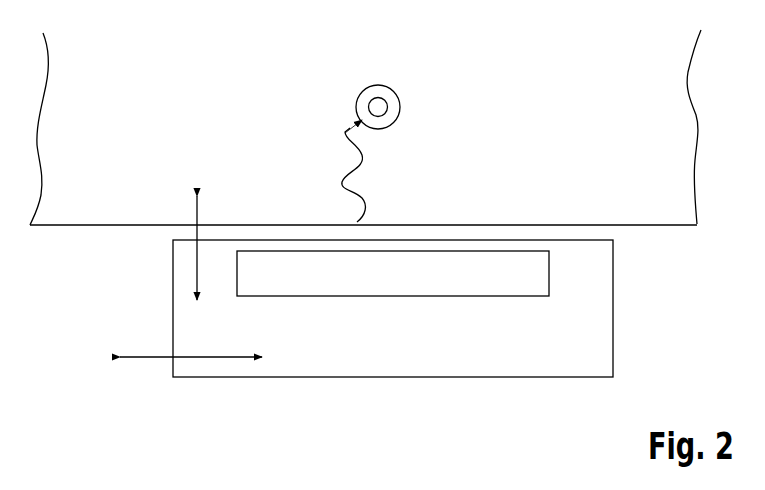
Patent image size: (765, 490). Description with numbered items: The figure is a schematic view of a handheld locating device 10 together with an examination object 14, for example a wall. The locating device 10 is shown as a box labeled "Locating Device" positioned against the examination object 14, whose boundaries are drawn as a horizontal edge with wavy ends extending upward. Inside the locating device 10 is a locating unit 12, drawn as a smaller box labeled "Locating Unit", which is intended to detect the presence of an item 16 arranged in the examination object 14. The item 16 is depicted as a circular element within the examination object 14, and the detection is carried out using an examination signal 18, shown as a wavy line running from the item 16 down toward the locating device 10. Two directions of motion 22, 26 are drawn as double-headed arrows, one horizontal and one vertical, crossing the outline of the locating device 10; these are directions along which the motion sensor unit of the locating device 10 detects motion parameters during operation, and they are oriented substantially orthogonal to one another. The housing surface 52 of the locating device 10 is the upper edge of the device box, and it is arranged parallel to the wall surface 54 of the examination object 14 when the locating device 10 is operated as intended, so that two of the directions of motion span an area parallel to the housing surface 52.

The locating device 10 is at (173, 317).
The locating unit 12 is at (326, 301).
The examination object 14 is at (679, 121).
The item 16 is at (394, 92).
The examination signal 18 is at (343, 192).
The direction of motion 22 is at (158, 357).
The direction of motion 26 is at (197, 262).
The housing surface 52 is at (578, 216).
The wall surface 54 is at (80, 226).